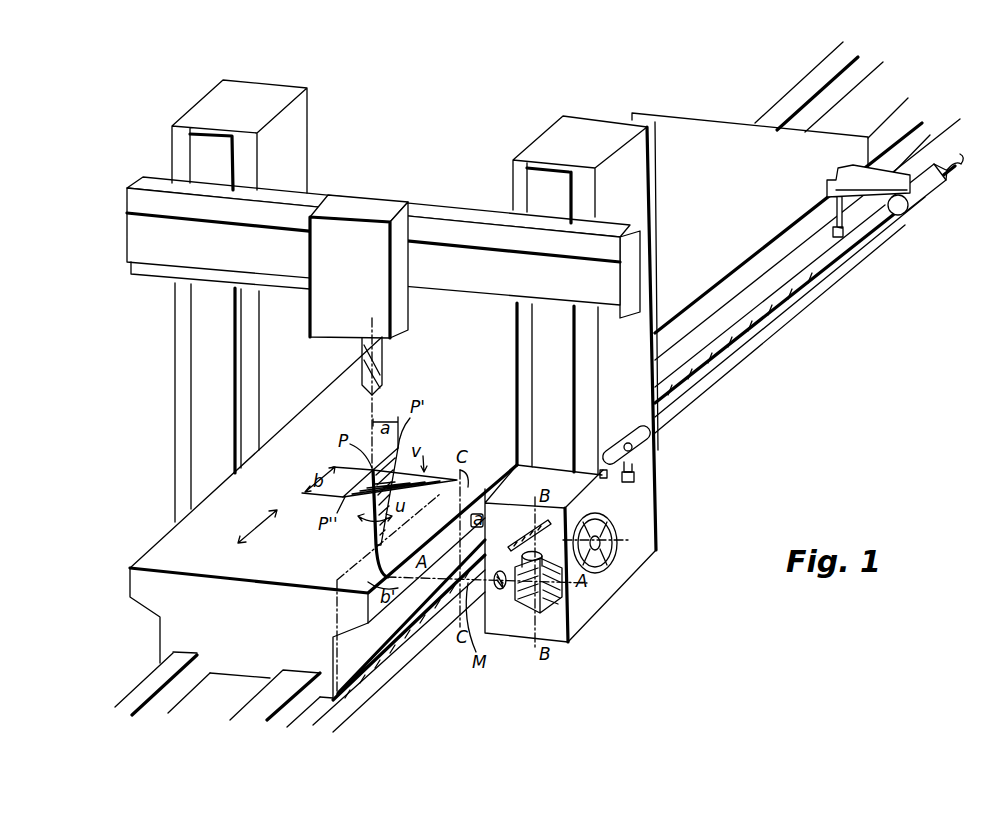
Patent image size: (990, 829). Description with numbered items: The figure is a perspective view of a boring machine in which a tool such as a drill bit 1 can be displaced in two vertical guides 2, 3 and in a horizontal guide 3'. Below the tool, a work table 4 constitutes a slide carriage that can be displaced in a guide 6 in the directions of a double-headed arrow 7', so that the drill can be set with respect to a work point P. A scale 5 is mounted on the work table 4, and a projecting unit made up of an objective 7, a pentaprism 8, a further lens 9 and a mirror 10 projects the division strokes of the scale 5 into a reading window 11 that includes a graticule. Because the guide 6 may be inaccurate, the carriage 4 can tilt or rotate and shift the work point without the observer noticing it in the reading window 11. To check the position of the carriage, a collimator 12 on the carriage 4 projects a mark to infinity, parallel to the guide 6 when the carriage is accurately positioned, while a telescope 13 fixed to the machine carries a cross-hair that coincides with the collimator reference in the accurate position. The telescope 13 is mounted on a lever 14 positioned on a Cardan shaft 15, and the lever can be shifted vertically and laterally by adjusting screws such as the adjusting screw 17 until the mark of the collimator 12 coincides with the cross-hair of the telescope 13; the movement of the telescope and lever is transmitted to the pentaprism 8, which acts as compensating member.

The drill bit 1 is at (340, 233).
The vertical guide 2 is at (245, 160).
The vertical guide 3 is at (584, 333).
The horizontal guide 3' is at (364, 247).
The work table 4 is at (172, 548).
The scale 5 is at (378, 663).
The guide 6 is at (253, 696).
The objective 7 is at (503, 599).
The double-headed arrow 7' is at (246, 526).
The pentaprism 8 is at (547, 606).
The further lens 9 is at (540, 542).
The mirror 10 is at (518, 540).
The reading window 11 is at (612, 531).
The collimator 12 is at (922, 190).
The telescope 13 is at (633, 430).
The lever 14 is at (657, 457).
The Cardan shaft 15 is at (660, 489).
The adjusting screw 17 is at (603, 479).